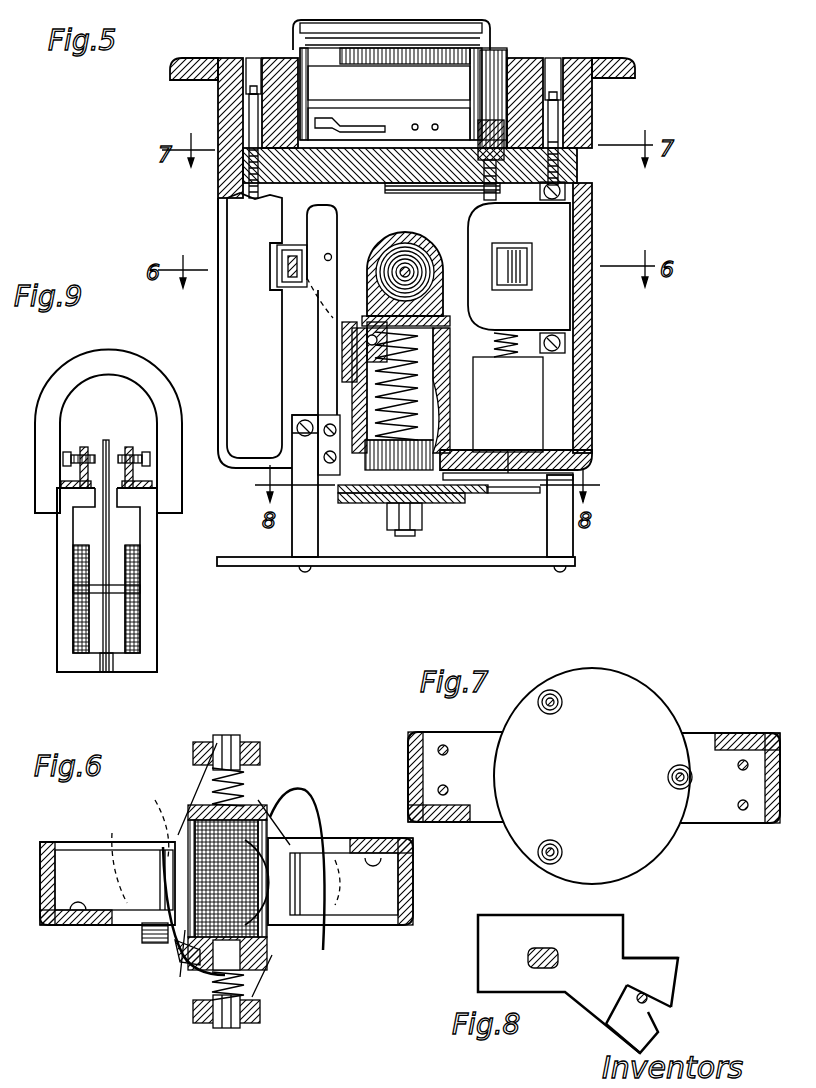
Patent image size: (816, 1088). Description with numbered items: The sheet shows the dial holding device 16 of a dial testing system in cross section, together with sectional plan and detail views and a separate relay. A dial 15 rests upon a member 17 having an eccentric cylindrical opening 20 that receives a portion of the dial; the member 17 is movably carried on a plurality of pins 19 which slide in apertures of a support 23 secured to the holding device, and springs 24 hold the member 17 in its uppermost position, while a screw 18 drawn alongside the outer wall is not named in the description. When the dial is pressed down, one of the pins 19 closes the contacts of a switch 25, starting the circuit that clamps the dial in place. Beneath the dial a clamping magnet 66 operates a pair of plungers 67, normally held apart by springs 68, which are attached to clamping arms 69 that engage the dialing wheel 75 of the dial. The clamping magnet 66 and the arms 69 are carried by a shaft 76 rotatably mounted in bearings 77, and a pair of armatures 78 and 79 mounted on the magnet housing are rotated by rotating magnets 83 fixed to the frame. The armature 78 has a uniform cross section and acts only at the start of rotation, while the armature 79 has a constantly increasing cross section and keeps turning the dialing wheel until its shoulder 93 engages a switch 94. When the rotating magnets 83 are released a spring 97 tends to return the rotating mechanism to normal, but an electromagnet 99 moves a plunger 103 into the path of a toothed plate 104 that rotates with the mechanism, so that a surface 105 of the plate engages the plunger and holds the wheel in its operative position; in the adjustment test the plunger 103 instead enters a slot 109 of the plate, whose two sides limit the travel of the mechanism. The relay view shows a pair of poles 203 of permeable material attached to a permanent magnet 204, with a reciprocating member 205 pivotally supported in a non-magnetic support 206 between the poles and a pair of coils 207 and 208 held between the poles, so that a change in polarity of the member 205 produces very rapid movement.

In FIG. 5, the dial 15 is at (290, 60).
In FIG. 5, the dial holding device 16 is at (584, 57).
In FIG. 5, the member 17 is at (512, 62).
In FIG. 5, the screw 18 is at (565, 112).
In FIG. 5, the pins 19 is at (470, 185).
In FIG. 7, the pins 19 is at (552, 690).
In FIG. 5, the eccentric cylindrical opening 20 is at (448, 90).
In FIG. 5, the support 23 is at (578, 160).
In FIG. 7, the support 23 is at (662, 845).
In FIG. 5, the springs 24 is at (505, 142).
In FIG. 7, the springs 24 is at (546, 690).
In FIG. 5, the switch 25 is at (383, 192).
In FIG. 5, the clamping magnet 66 is at (366, 258).
In FIG. 6, the clamping magnet 66 is at (262, 937).
In FIG. 6, the plungers 67 is at (160, 822).
In FIG. 6, the springs 68 is at (256, 778).
In FIG. 6, the clamping arms 69 is at (258, 742).
In FIG. 5, the dialing wheel 75 is at (300, 30).
In FIG. 5, the shaft 76 is at (450, 340).
In FIG. 5, the bearings 77 is at (340, 338).
In FIG. 5, the armature 78 is at (512, 270).
In FIG. 6, the armature 78 is at (305, 790).
In FIG. 5, the armature 79 is at (284, 262).
In FIG. 6, the armature 79 is at (186, 950).
In FIG. 5, the rotating magnets 83 is at (290, 298).
In FIG. 6, the rotating magnets 83 is at (98, 860).
In FIG. 6, the shoulder 93 is at (192, 966).
In FIG. 5, the switch 94 is at (323, 365).
In FIG. 6, the switch 94 is at (166, 932).
In FIG. 5, the spring 97 is at (455, 396).
In FIG. 5, the electromagnet 99 is at (526, 402).
In FIG. 5, the plunger 103 is at (575, 481).
In FIG. 8, the plunger 103 is at (655, 1003).
In FIG. 8, the toothed plate 104 is at (665, 975).
In FIG. 8, the surface 105 is at (666, 955).
In FIG. 8, the slot 109 is at (655, 1024).
In FIG. 9, the poles 203 is at (62, 588).
In FIG. 9, the permanent magnet 204 is at (92, 352).
In FIG. 9, the reciprocating member 205 is at (110, 530).
In FIG. 9, the support 206 is at (110, 675).
In FIG. 9, the coil 207 is at (140, 622).
In FIG. 9, the coil 208 is at (140, 574).